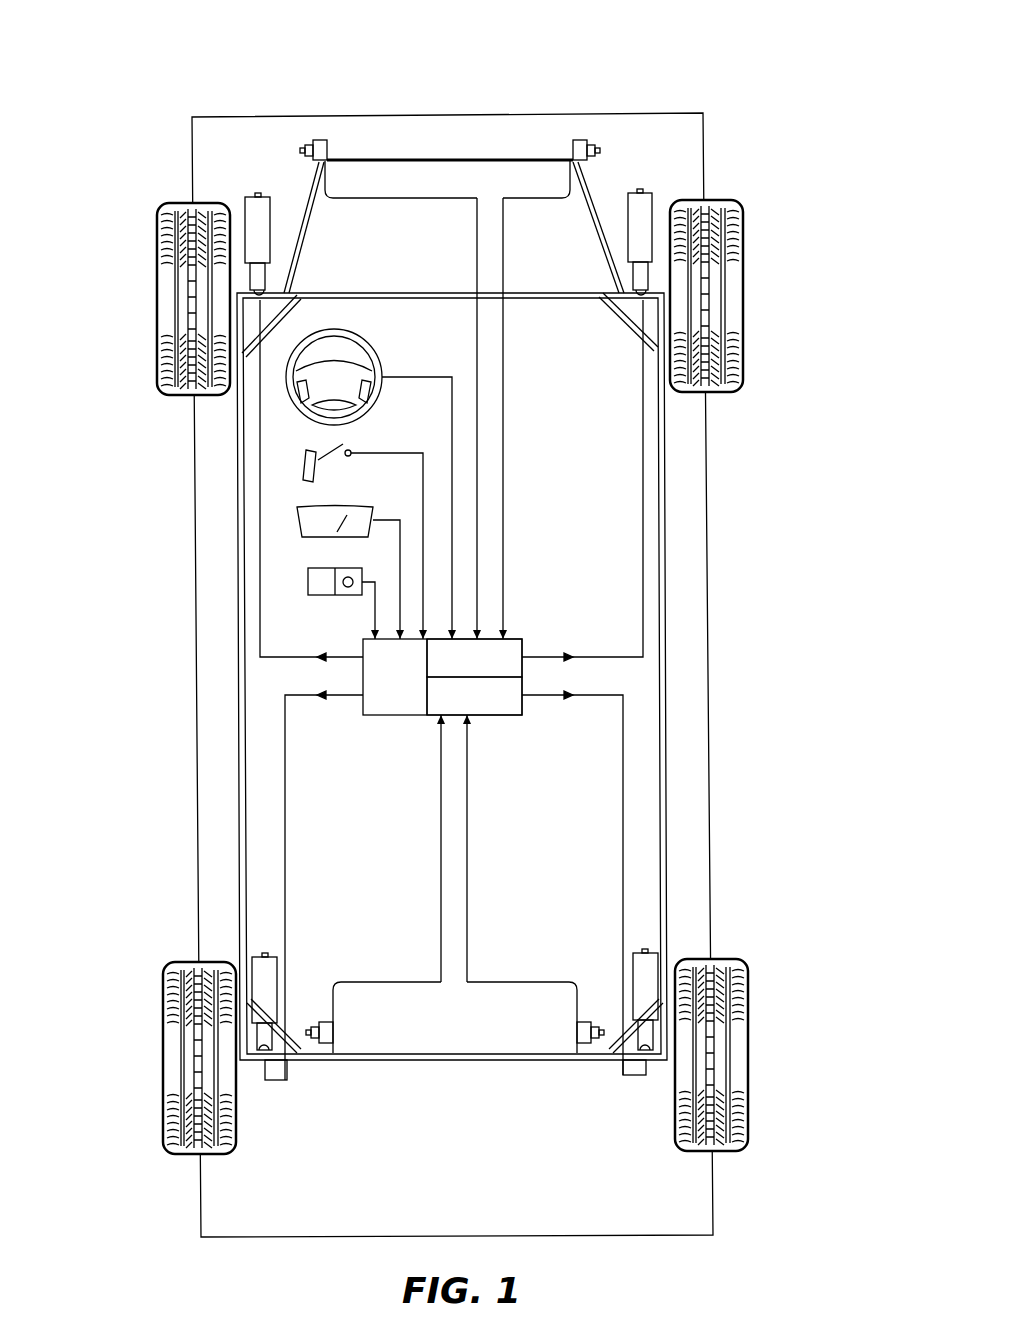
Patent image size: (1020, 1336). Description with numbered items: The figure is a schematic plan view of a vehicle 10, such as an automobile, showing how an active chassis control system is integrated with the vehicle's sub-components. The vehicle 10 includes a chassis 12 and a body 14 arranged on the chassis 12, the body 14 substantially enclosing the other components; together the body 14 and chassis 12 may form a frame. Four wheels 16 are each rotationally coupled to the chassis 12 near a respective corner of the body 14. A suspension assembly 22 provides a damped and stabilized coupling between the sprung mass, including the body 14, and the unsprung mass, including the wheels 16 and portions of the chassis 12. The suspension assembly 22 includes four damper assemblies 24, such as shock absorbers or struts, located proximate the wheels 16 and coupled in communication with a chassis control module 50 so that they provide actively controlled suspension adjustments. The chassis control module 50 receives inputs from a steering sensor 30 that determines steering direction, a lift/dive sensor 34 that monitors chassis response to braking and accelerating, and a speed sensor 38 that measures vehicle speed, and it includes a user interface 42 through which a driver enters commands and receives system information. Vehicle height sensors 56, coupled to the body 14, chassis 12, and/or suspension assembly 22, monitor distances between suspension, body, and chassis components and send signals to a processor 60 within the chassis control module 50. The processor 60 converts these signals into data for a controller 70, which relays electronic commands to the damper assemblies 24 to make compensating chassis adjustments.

The vehicle 10 is at (728, 35).
The chassis 12 is at (240, 782).
The body 14 is at (198, 908).
The wheels 16 is at (157, 268).
The suspension assembly 22 is at (300, 313).
The damper assembly 24 is at (249, 275).
The steering sensor 30 is at (382, 357).
The lift/dive sensor 34 is at (302, 465).
The speed sensor 38 is at (297, 522).
The user interface 42 is at (308, 585).
The chassis control module 50 is at (473, 710).
The vehicle height sensors 56 is at (317, 140).
The processor 60 is at (523, 707).
The controller 70 is at (523, 643).